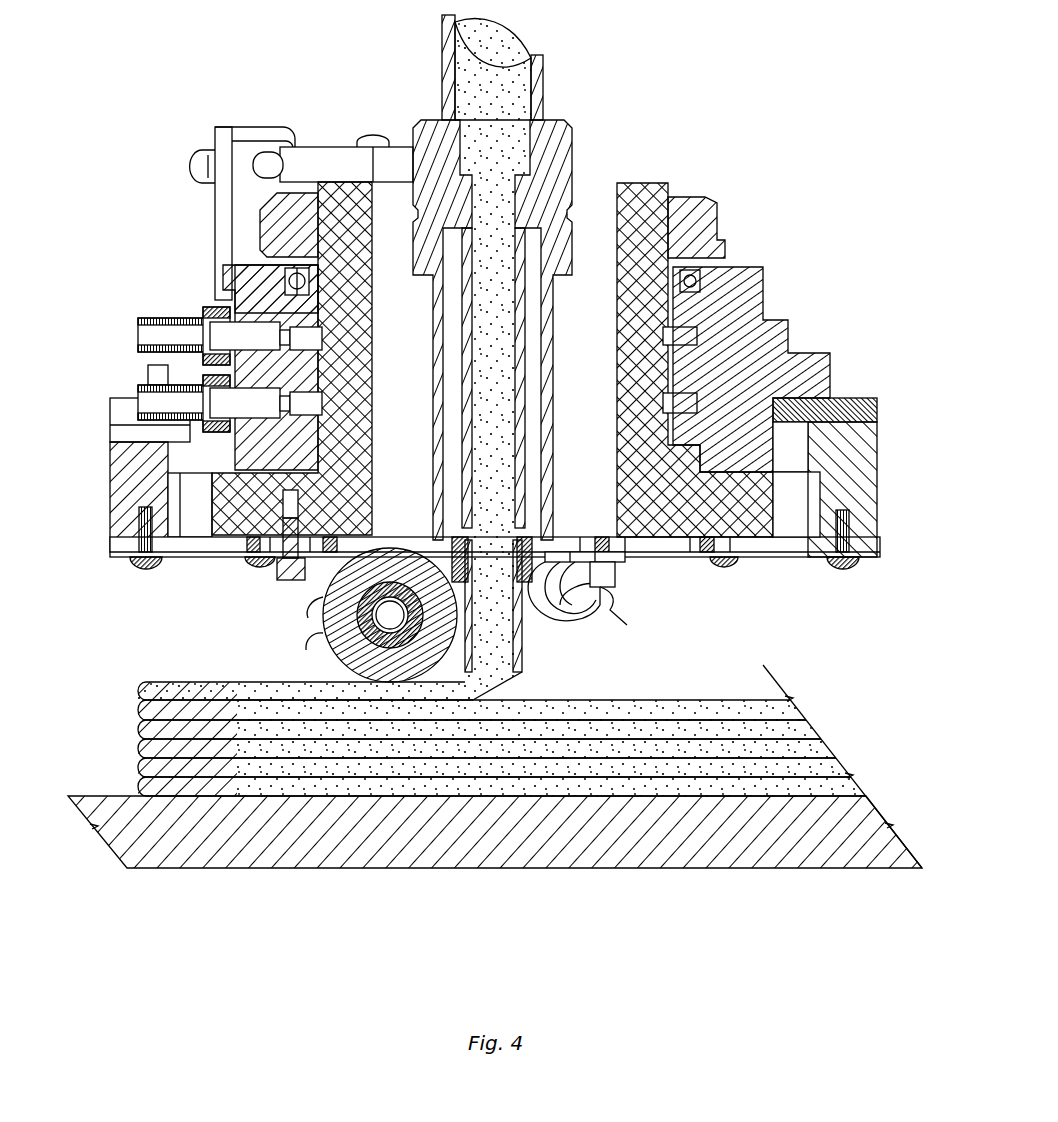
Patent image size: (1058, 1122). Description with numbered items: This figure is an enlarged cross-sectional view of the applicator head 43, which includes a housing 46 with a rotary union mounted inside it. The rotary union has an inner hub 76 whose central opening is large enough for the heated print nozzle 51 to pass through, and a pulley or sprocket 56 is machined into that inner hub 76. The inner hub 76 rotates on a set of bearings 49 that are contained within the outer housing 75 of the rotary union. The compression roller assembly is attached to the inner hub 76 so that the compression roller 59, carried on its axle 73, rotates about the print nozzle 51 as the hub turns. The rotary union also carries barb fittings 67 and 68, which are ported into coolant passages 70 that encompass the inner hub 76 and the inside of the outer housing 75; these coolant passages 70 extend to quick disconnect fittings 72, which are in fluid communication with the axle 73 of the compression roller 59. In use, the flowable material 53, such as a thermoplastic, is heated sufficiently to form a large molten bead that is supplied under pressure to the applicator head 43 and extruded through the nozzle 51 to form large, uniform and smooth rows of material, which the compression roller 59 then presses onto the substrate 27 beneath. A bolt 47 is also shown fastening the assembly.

The substrate 27 is at (625, 868).
The applicator head 43 is at (820, 212).
The housing 46 is at (877, 467).
The bolt 47 is at (280, 578).
The bearings 49 is at (800, 430).
The print nozzle 51 is at (430, 118).
The flowable material 53 is at (500, 45).
The pulley or sprocket 56 is at (773, 512).
The compression roller 59 is at (323, 638).
The barb fitting 67 is at (138, 405).
The barb fitting 68 is at (138, 328).
The coolant passages 70 is at (748, 437).
The quick disconnect fittings 72 is at (612, 603).
The axle 73 is at (322, 613).
The outer housing 75 is at (258, 268).
The inner hub 76 is at (650, 185).